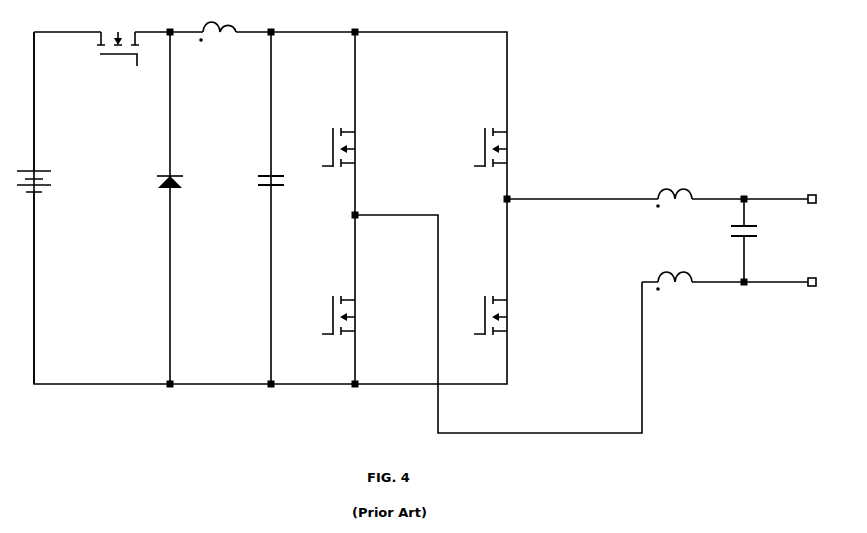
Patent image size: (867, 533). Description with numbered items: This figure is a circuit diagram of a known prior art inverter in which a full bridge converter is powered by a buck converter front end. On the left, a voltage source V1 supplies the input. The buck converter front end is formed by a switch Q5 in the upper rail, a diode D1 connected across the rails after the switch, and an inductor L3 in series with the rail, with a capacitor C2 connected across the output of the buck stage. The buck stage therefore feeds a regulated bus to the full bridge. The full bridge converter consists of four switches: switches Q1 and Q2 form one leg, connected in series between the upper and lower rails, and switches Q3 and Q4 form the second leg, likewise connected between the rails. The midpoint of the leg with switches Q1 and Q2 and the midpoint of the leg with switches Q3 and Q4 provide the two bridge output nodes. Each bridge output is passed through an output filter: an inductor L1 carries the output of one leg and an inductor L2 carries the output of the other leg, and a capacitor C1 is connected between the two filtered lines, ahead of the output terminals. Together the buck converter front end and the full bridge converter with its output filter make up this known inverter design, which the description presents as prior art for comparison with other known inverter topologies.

The switch transistor Q5 is at (108, 48).
The inductor L3 is at (217, 40).
The voltage source V1 is at (45, 208).
The diode D1 is at (160, 177).
The capacitor C2 is at (281, 177).
The transistor Q1 is at (338, 157).
The transistor Q2 is at (338, 324).
The transistor Q3 is at (490, 157).
The transistor Q4 is at (490, 324).
The output inductor L1 is at (674, 207).
The output capacitor C1 is at (754, 228).
The output inductor L2 is at (674, 290).